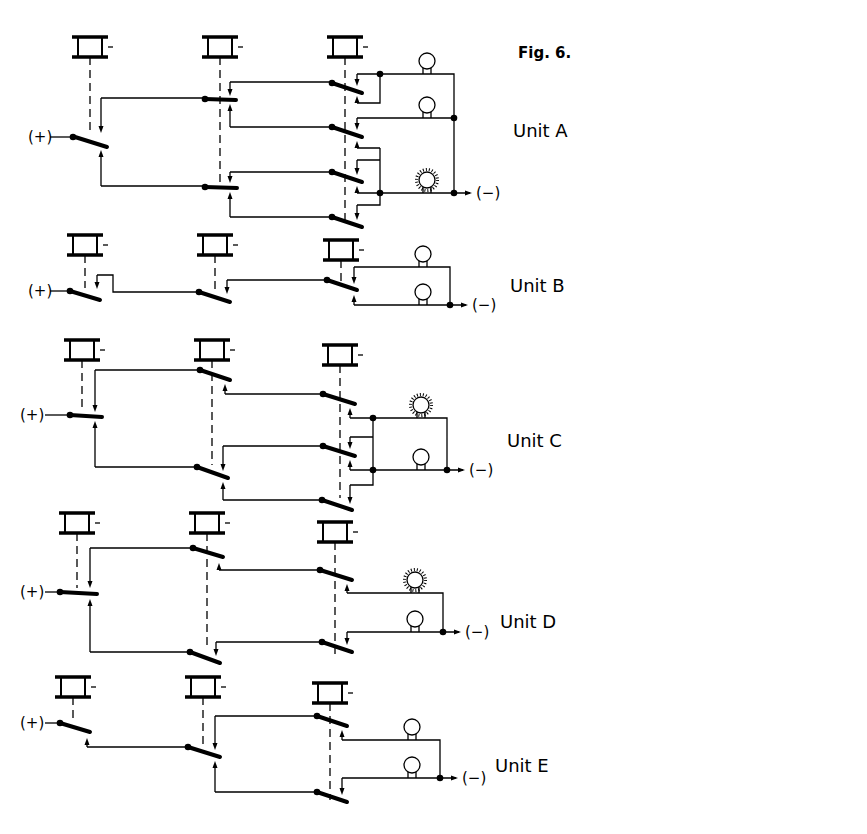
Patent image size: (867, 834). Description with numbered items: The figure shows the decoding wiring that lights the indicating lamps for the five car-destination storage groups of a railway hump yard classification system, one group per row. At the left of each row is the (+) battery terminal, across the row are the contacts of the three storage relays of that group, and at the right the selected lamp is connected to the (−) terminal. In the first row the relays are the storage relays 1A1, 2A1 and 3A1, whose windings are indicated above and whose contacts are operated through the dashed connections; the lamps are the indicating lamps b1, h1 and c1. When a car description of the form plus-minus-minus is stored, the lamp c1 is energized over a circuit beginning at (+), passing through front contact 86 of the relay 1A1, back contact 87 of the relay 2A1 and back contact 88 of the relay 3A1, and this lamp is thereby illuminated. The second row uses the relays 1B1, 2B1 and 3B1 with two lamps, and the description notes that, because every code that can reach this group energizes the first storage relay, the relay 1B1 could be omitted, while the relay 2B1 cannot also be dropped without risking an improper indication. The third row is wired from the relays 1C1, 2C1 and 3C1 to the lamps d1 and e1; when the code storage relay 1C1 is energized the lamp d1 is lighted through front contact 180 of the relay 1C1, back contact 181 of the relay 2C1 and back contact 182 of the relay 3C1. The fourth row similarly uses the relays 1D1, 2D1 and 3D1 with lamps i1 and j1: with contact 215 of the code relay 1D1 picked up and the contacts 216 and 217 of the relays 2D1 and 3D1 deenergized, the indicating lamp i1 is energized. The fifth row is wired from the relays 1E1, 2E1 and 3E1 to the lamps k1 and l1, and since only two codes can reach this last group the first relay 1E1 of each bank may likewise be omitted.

The front contact 86 is at (86, 143).
The back contact 87 is at (207, 103).
The back contact 88 is at (341, 133).
The front contact 180 is at (71, 419).
The back contact 181 is at (204, 376).
The back contact 182 is at (330, 400).
The contact 215 is at (72, 596).
The contact 216 is at (200, 553).
The contact 217 is at (326, 577).
The storage relay 1A1 is at (105, 85).
The storage relay 2A1 is at (235, 111).
The storage relay 3A1 is at (360, 131).
The storage relay 1B1 is at (100, 261).
The storage relay 2B1 is at (230, 262).
The storage relay 3B1 is at (356, 263).
The code storage relay 1C1 is at (97, 375).
The storage relay 2C1 is at (227, 402).
The storage relay 3C1 is at (355, 421).
The code relay 1D1 is at (92, 550).
The relay 2D1 is at (222, 581).
The relay 3D1 is at (350, 588).
The storage relay 1E1 is at (87, 699).
The storage relay 2E1 is at (217, 712).
The storage relay 3E1 is at (344, 741).
The indicating lamp b1 is at (436, 58).
The indicating lamp h1 is at (419, 104).
The indicating lamp c1 is at (418, 172).
The lamp d1 is at (429, 399).
The indicating lamp e1 is at (412, 452).
The indicating lamp i1 is at (426, 573).
The indicating lamp j1 is at (408, 619).
The indicating lamp k1 is at (420, 722).
The indicating lamp l1 is at (404, 764).